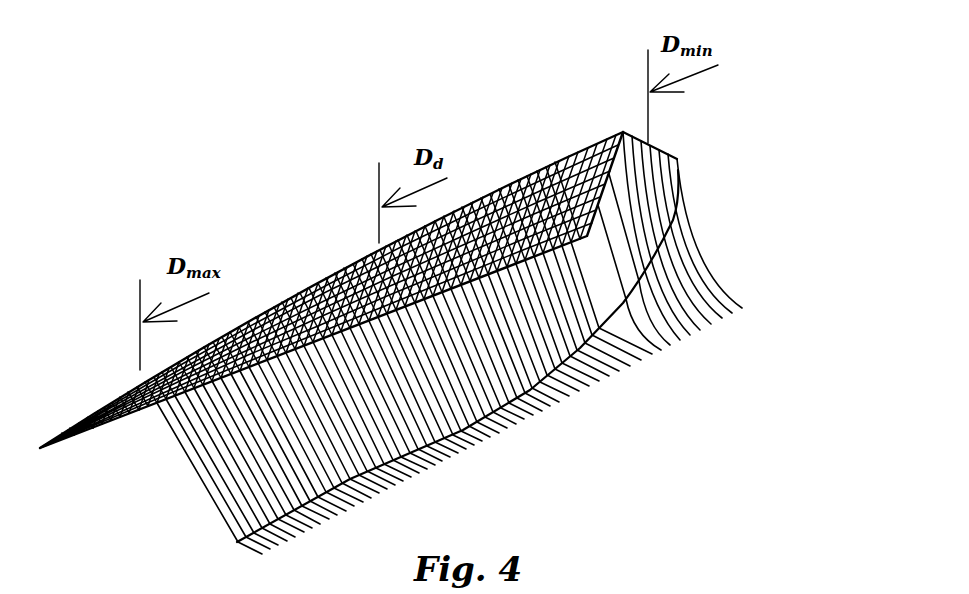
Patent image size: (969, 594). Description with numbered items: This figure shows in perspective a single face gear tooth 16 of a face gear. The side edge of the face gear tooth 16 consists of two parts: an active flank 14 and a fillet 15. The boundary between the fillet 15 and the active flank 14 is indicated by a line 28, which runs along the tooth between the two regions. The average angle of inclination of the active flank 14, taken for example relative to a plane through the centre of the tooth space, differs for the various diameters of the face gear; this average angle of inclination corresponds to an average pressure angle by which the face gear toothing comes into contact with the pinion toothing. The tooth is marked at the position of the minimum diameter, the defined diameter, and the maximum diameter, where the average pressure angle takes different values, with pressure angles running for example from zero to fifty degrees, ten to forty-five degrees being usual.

The active flank 14 is at (293, 447).
The fillet 15 is at (688, 278).
The face gear tooth 16 is at (325, 236).
The line 28 is at (598, 362).